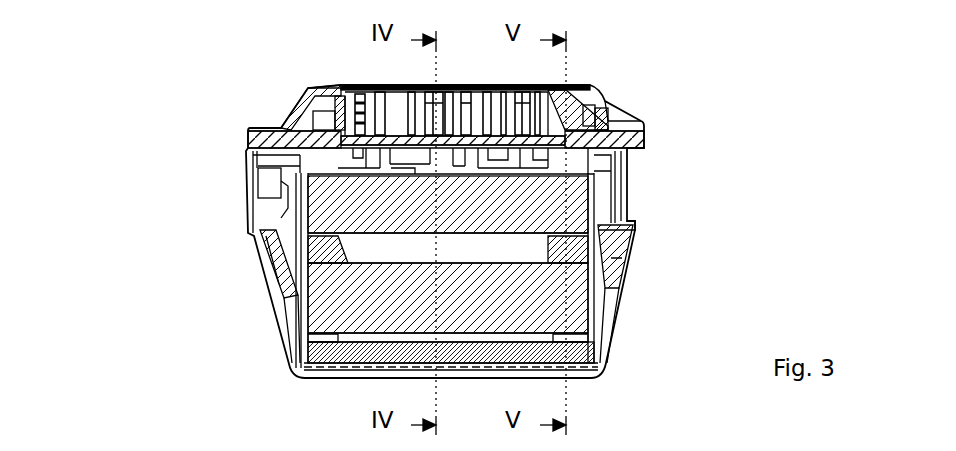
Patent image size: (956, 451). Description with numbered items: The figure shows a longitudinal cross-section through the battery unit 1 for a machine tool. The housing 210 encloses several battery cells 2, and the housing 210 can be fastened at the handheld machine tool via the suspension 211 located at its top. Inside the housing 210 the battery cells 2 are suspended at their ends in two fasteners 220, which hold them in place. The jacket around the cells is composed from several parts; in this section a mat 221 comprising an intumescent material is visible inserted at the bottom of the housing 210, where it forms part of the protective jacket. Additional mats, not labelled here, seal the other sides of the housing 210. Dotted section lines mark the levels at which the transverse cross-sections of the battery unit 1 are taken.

The battery unit 1 is at (96, 61).
The battery cells 2 is at (340, 187).
The housing 210 is at (598, 268).
The suspension 211 is at (553, 97).
The fasteners 220 is at (325, 242).
The mat 221 is at (383, 348).